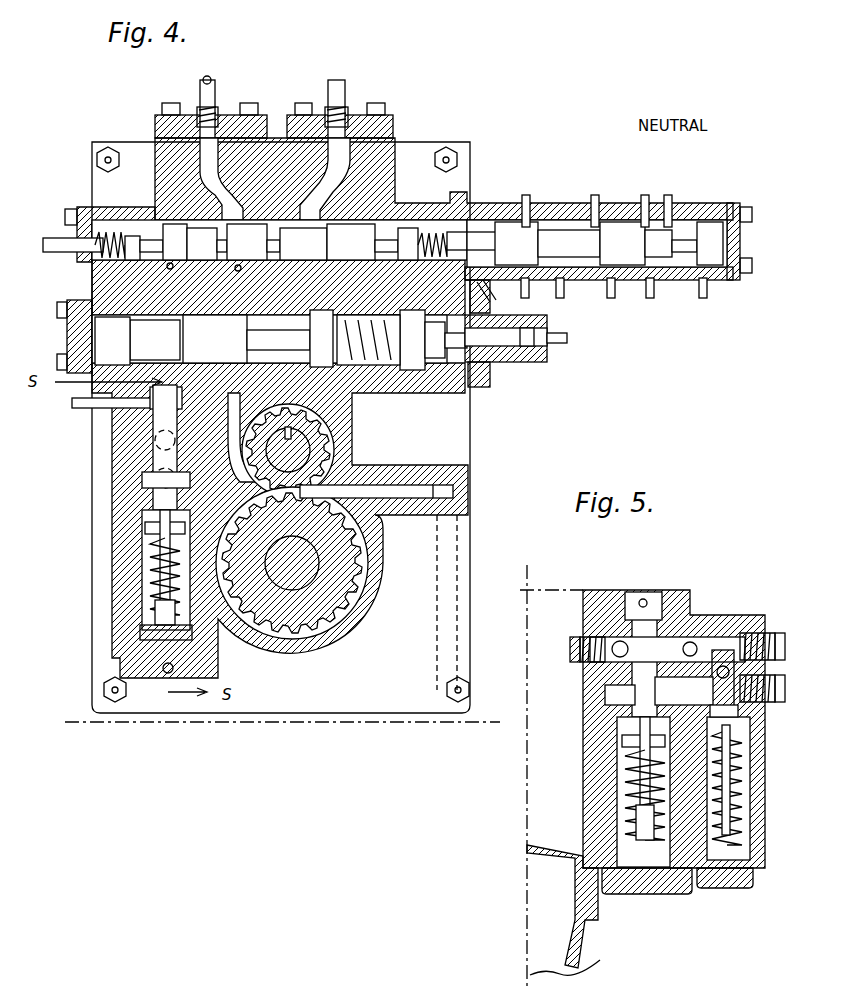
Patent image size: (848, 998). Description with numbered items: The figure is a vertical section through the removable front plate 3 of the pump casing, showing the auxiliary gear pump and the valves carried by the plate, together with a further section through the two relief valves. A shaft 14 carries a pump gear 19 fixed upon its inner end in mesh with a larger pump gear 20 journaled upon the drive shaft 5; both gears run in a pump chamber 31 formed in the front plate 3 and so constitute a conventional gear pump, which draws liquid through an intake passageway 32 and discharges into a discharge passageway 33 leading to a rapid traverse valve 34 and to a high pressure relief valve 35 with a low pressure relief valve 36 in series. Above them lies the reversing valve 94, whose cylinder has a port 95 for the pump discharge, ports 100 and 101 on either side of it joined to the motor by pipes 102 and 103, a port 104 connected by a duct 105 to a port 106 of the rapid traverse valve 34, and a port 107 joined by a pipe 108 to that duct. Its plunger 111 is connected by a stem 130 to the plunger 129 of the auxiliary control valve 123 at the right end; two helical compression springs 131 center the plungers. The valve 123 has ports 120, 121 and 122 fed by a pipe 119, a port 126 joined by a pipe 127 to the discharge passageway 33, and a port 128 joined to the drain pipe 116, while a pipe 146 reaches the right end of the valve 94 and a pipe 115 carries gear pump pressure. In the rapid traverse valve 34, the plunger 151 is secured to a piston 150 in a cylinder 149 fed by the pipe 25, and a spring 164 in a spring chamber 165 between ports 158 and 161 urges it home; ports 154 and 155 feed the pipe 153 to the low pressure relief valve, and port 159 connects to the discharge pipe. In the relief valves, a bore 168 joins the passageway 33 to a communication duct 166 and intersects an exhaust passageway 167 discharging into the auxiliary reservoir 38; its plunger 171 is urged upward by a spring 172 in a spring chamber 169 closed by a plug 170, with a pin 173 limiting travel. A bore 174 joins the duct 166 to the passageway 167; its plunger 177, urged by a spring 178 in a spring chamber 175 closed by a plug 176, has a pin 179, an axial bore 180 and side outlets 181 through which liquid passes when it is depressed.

In FIG. 4, the front plate 3 is at (355, 708).
In FIG. 5, the front plate 3 is at (588, 592).
In FIG. 4, the drive shaft 5 is at (292, 563).
In FIG. 4, the shaft 14 is at (288, 450).
In FIG. 4, the pump gear 19 is at (322, 440).
In FIG. 4, the pump gear 20 is at (362, 615).
In FIG. 4, the pipe 25 is at (568, 340).
In FIG. 4, the pump chamber 31 is at (383, 558).
In FIG. 4, the intake passageway 32 is at (376, 491).
In FIG. 4, the discharge passageway 33 is at (235, 432).
In FIG. 5, the discharge passageway 33 is at (650, 592).
In FIG. 4, the rapid traverse valve 34 is at (92, 336).
In FIG. 4, the high pressure relief valve 35 is at (145, 566).
In FIG. 5, the high pressure relief valve 35 is at (570, 782).
In FIG. 5, the low pressure relief valve 36 is at (770, 755).
In FIG. 5, the auxiliary reservoir 38 is at (556, 852).
In FIG. 4, the reversing valve 94 is at (107, 212).
In FIG. 4, the port 95 is at (236, 272).
In FIG. 4, the port 100 is at (233, 218).
In FIG. 4, the port 101 is at (318, 218).
In FIG. 4, the pipe 102 is at (198, 88).
In FIG. 4, the pipe 103 is at (330, 86).
In FIG. 4, the port 104 is at (202, 247).
In FIG. 4, the duct 105 is at (172, 270).
In FIG. 4, the port 106 is at (112, 341).
In FIG. 4, the port 107 is at (342, 278).
In FIG. 4, the pipe 108 is at (160, 284).
In FIG. 4, the plunger 111 is at (255, 240).
In FIG. 4, the pipe 115 is at (88, 408).
In FIG. 4, the drain pipe 116 is at (492, 284).
In FIG. 4, the pipe 119 is at (530, 285).
In FIG. 4, the port 120 is at (530, 210).
In FIG. 4, the port 121 is at (607, 208).
In FIG. 4, the port 122 is at (650, 220).
In FIG. 4, the auxiliary control valve 123 is at (718, 205).
In FIG. 4, the port 126 is at (577, 205).
In FIG. 4, the pipe 127 is at (575, 290).
In FIG. 4, the port 128 is at (668, 220).
In FIG. 4, the plunger 129 is at (609, 243).
In FIG. 4, the stem 130 is at (480, 240).
In FIG. 4, the helical compression springs 131 is at (452, 236).
In FIG. 4, the pipe 146 is at (440, 306).
In FIG. 4, the cylinder 149 is at (535, 362).
In FIG. 4, the piston 150 is at (498, 350).
In FIG. 4, the plunger 151 is at (262, 336).
In FIG. 5, the pipe 153 is at (692, 642).
In FIG. 4, the port 154 is at (162, 339).
In FIG. 4, the port 155 is at (238, 318).
In FIG. 4, the port 158 is at (315, 368).
In FIG. 4, the port 159 is at (268, 368).
In FIG. 4, the port 161 is at (418, 372).
In FIG. 4, the helical compression spring 164 is at (382, 365).
In FIG. 4, the spring chamber 165 is at (358, 365).
In FIG. 4, the communication duct 166 is at (155, 442).
In FIG. 5, the communication duct 166 is at (606, 640).
In FIG. 4, the exhaust passageway 167 is at (145, 480).
In FIG. 5, the exhaust passageway 167 is at (620, 697).
In FIG. 4, the bore 168 is at (158, 466).
In FIG. 5, the bore 168 is at (640, 667).
In FIG. 4, the spring chamber 169 is at (154, 604).
In FIG. 5, the spring chamber 169 is at (620, 814).
In FIG. 5, the plug 170 is at (660, 882).
In FIG. 4, the plunger 171 is at (160, 495).
In FIG. 5, the plunger 171 is at (636, 598).
In FIG. 4, the helical compression spring 172 is at (150, 537).
In FIG. 5, the helical compression spring 172 is at (622, 762).
In FIG. 4, the pin 173 is at (160, 618).
In FIG. 5, the pin 173 is at (640, 785).
In FIG. 5, the bore 174 is at (752, 668).
In FIG. 5, the spring chamber 175 is at (742, 818).
In FIG. 5, the plug 176 is at (725, 884).
In FIG. 5, the plunger 177 is at (745, 708).
In FIG. 5, the helical compression spring 178 is at (740, 778).
In FIG. 5, the pin 179 is at (740, 735).
In FIG. 5, the axial bore 180 is at (722, 654).
In FIG. 5, the side outlets 181 is at (684, 691).